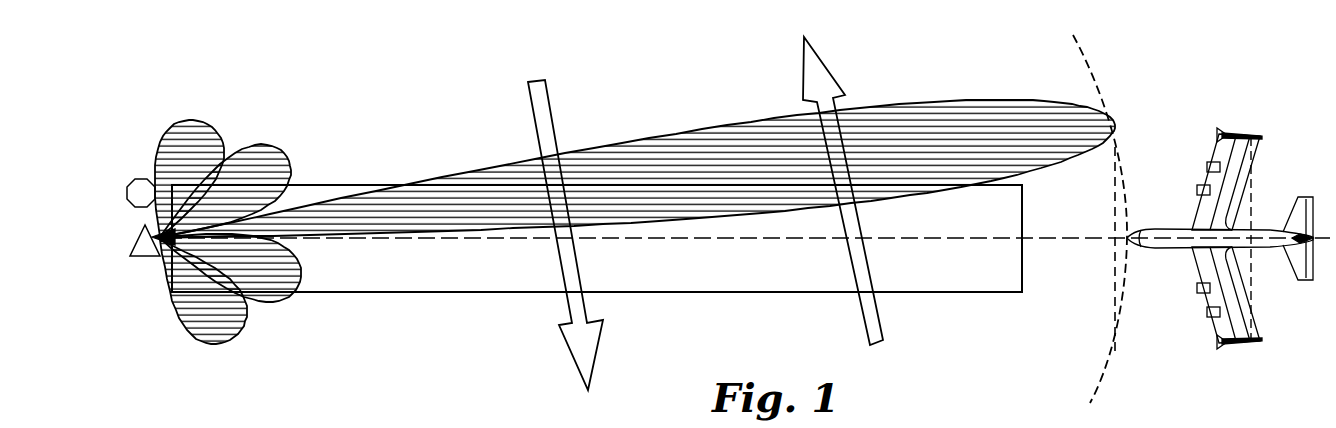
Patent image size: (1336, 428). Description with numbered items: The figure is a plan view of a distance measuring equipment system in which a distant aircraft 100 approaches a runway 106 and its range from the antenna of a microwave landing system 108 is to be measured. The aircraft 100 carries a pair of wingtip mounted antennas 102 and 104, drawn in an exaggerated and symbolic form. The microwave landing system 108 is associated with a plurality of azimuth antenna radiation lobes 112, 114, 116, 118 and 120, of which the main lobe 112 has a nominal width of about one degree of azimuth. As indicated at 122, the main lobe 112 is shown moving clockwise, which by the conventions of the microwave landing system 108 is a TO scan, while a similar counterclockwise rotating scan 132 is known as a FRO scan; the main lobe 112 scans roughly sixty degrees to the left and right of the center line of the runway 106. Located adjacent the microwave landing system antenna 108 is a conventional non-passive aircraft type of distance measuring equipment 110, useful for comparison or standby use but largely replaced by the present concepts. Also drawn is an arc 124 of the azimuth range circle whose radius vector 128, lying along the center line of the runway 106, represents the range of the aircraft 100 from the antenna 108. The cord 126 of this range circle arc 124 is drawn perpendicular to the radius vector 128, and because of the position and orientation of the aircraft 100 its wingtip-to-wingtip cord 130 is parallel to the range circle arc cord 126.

The aircraft 100 is at (1143, 232).
The wingtip mounted antenna 102 is at (1218, 128).
The wingtip mounted antenna 104 is at (1220, 348).
The runway 106 is at (1012, 185).
The microwave landing system antenna 108 is at (145, 258).
The conventional non-passive distance measuring equipment 110 is at (146, 178).
The main lobe 112 is at (442, 172).
The azimuth antenna radiation lobe 114 is at (198, 122).
The azimuth antenna radiation lobe 116 is at (267, 155).
The azimuth antenna radiation lobe 118 is at (303, 284).
The azimuth antenna radiation lobe 120 is at (233, 340).
The clockwise scan indication 122 is at (562, 132).
The arc of azimuth range circle 124 is at (1090, 60).
The cord of range circle arc 126 is at (1113, 165).
The radius vector 128 is at (905, 235).
The wingtip-to-wingtip cord 130 is at (1252, 196).
The counterclockwise rotating scan 132 is at (840, 82).